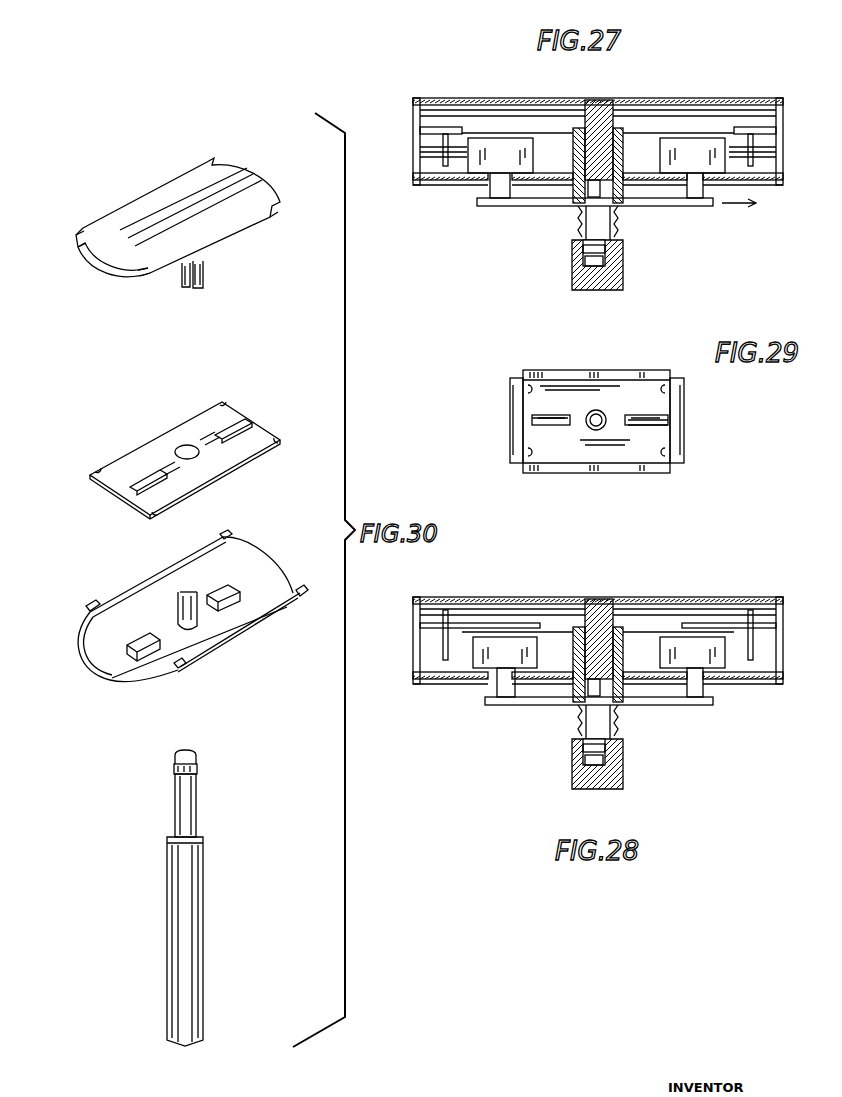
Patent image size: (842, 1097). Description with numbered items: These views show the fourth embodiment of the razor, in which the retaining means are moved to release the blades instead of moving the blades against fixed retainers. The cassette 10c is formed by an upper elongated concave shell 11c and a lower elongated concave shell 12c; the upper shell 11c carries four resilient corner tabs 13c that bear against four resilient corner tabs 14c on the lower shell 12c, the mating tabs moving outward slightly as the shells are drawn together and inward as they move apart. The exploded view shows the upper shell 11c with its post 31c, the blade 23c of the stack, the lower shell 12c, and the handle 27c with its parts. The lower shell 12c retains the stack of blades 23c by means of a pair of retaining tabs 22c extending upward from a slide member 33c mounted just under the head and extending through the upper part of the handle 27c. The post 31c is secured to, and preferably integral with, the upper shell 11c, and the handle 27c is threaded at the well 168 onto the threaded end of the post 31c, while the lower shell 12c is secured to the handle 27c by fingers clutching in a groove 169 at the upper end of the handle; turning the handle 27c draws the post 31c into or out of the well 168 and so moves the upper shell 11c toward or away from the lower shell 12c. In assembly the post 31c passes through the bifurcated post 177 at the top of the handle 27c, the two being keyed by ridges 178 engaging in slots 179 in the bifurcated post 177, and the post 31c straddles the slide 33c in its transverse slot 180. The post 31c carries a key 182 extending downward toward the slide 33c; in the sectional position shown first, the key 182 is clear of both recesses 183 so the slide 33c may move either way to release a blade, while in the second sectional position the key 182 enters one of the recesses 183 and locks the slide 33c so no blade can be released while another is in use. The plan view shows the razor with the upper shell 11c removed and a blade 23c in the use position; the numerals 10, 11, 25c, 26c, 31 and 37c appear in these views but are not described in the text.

In FIG. 27, the mounting assembly 10 is at (602, 98).
In FIG. 28, the cassette 10c is at (609, 564).
In FIG. 27, the cover 11 is at (458, 100).
In FIG. 28, the upper elongated concave shell 11c is at (598, 623).
In FIG. 30, the upper elongated concave shell 11c is at (143, 195).
In FIG. 27, the lower elongated concave shell 12c is at (442, 185).
In FIG. 28, the lower elongated concave shell 12c is at (598, 696).
In FIG. 30, the lower elongated concave shell 12c is at (256, 640).
In FIG. 30, the resilient corner tabs 13c is at (76, 246).
In FIG. 30, the resilient corner tabs 14c is at (88, 610).
In FIG. 27, the retaining tabs 22c is at (495, 140).
In FIG. 28, the retaining tabs 22c is at (603, 630).
In FIG. 29, the retaining tabs 22c is at (548, 415).
In FIG. 30, the retaining tabs 22c is at (142, 636).
In FIG. 27, the stack of blades 23c is at (452, 148).
In FIG. 28, the stack of blades 23c is at (574, 635).
In FIG. 29, the stack of blades 23c is at (620, 372).
In FIG. 30, the stack of blades 23c is at (143, 448).
In FIG. 29, the slot 25c is at (642, 428).
In FIG. 30, the slot 25c is at (233, 432).
In FIG. 29, the slot 26c is at (565, 428).
In FIG. 30, the slot 26c is at (133, 489).
In FIG. 27, the handle 27c is at (572, 278).
In FIG. 28, the handle 27c is at (571, 768).
In FIG. 30, the handle 27c is at (221, 868).
In FIG. 28, the stem 31 is at (624, 621).
In FIG. 27, the post 31c is at (617, 112).
In FIG. 30, the post 31c is at (204, 290).
In FIG. 27, the slide member 33c is at (700, 206).
In FIG. 28, the slide member 33c is at (606, 714).
In FIG. 29, the hole 37c is at (610, 404).
In FIG. 27, the threaded well 168 is at (603, 260).
In FIG. 28, the threaded well 168 is at (633, 780).
In FIG. 30, the threaded well 168 is at (193, 752).
In FIG. 27, the groove 169 is at (584, 252).
In FIG. 28, the groove 169 is at (632, 761).
In FIG. 30, the groove 169 is at (198, 769).
In FIG. 27, the bifurcated post 177 is at (575, 140).
In FIG. 28, the bifurcated post 177 is at (617, 664).
In FIG. 30, the bifurcated post 177 is at (196, 626).
In FIG. 30, the ridges 178 is at (202, 266).
In FIG. 30, the slots 179 is at (180, 594).
In FIG. 30, the transverse slot 180 is at (185, 290).
In FIG. 27, the key 182 is at (588, 198).
In FIG. 28, the key 182 is at (556, 711).
In FIG. 27, the recesses 183 is at (580, 215).
In FIG. 28, the recesses 183 is at (591, 736).